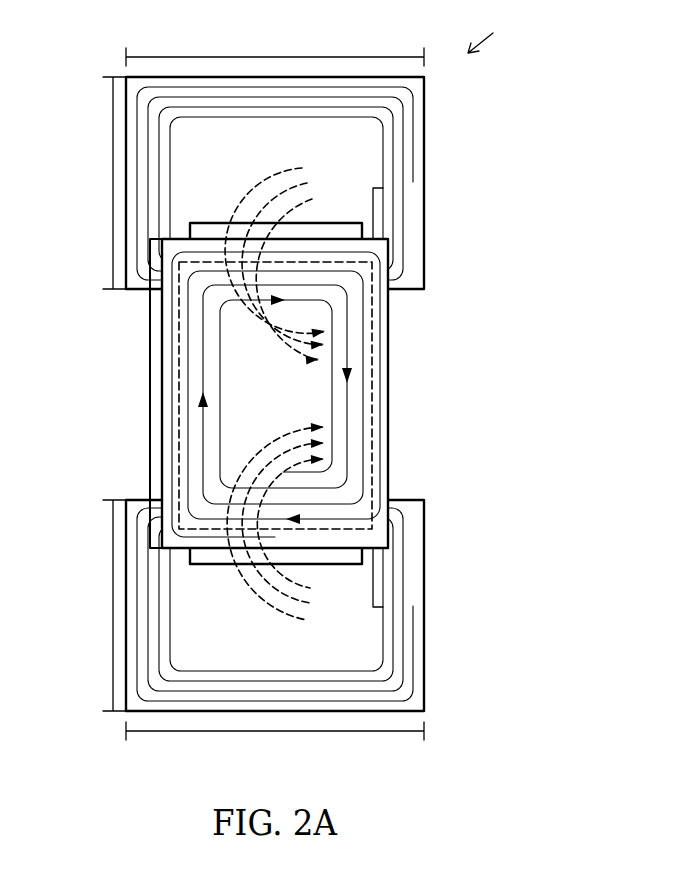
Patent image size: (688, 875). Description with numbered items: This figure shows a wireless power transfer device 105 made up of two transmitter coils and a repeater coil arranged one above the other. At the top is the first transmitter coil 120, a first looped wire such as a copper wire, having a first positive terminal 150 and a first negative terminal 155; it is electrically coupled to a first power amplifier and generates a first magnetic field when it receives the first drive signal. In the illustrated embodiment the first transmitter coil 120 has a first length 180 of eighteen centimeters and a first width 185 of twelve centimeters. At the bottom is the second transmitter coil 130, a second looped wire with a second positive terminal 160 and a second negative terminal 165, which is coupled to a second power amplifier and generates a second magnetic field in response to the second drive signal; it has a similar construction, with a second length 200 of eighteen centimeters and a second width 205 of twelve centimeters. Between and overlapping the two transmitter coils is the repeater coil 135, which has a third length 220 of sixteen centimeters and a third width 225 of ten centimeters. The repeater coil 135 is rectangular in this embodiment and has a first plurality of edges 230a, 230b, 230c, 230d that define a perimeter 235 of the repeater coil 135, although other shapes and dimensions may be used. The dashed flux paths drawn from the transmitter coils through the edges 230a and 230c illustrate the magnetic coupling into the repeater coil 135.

The wireless power transfer device 105 is at (494, 28).
The first transmitter coil 120 is at (373, 140).
The second transmitter coil 130 is at (393, 575).
The repeater coil 135 is at (363, 400).
The first positive terminal 150 is at (380, 188).
The first negative terminal 155 is at (172, 187).
The second positive terminal 160 is at (380, 607).
The second negative terminal 165 is at (175, 650).
The first length 180 is at (112, 219).
The first width 185 is at (275, 57).
The second length 200 is at (113, 588).
The second width 205 is at (277, 731).
The third length 220 is at (149, 347).
The third width 225 is at (372, 512).
The edge 230a is at (350, 237).
The edge 230b is at (382, 362).
The edge 230c is at (327, 520).
The edge 230d is at (167, 397).
The perimeter 235 is at (178, 460).